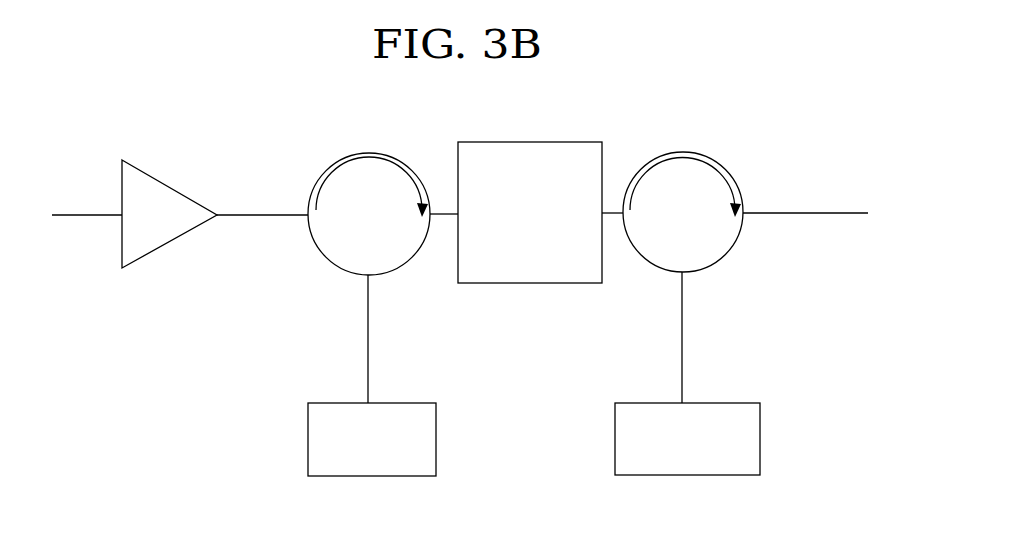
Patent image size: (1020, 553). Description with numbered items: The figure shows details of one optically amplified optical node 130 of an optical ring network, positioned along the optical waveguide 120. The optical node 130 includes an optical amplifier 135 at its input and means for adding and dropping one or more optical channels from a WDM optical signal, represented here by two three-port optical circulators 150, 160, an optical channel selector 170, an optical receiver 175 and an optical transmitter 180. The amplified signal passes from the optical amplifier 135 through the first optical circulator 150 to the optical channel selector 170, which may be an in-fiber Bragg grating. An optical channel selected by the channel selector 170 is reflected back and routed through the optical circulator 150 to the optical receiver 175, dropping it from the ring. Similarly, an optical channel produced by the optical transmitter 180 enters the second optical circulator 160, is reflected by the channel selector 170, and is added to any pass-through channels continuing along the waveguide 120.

The optical waveguide 120 is at (70, 215).
The optical node 130 is at (601, 100).
The optical amplifier 135 is at (172, 188).
The optical circulator 150 is at (350, 153).
The optical circulator 160 is at (690, 153).
The optical channel selector 170 is at (545, 284).
The optical receiver 175 is at (335, 403).
The optical transmitter 180 is at (720, 403).